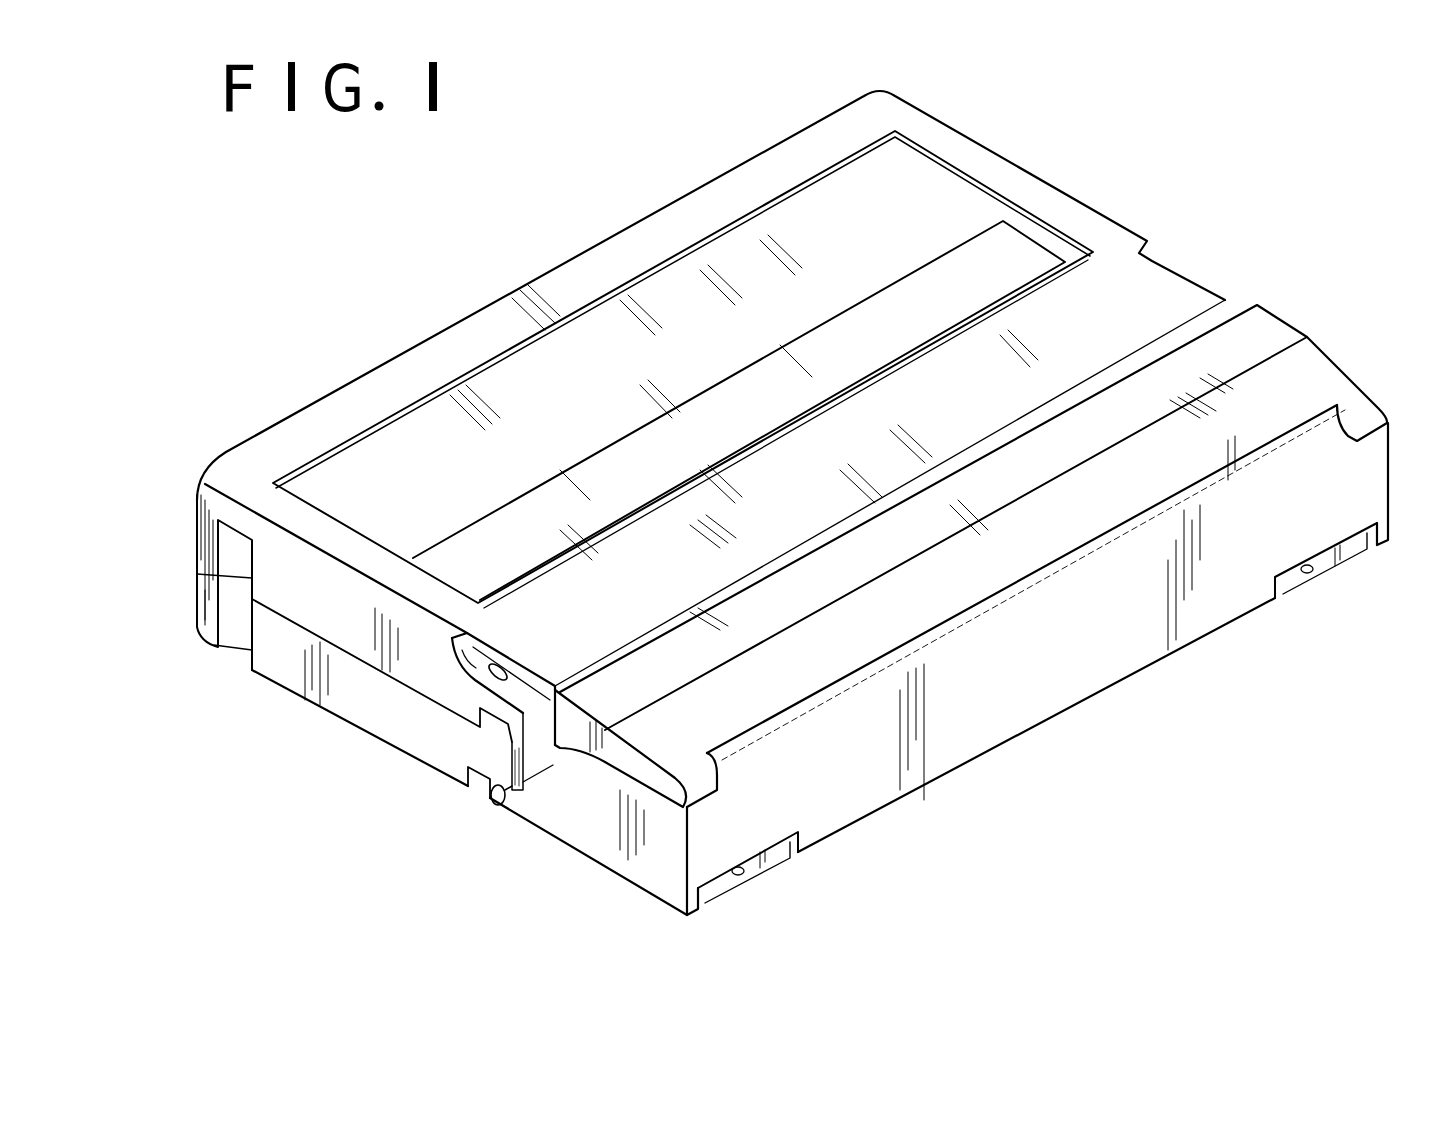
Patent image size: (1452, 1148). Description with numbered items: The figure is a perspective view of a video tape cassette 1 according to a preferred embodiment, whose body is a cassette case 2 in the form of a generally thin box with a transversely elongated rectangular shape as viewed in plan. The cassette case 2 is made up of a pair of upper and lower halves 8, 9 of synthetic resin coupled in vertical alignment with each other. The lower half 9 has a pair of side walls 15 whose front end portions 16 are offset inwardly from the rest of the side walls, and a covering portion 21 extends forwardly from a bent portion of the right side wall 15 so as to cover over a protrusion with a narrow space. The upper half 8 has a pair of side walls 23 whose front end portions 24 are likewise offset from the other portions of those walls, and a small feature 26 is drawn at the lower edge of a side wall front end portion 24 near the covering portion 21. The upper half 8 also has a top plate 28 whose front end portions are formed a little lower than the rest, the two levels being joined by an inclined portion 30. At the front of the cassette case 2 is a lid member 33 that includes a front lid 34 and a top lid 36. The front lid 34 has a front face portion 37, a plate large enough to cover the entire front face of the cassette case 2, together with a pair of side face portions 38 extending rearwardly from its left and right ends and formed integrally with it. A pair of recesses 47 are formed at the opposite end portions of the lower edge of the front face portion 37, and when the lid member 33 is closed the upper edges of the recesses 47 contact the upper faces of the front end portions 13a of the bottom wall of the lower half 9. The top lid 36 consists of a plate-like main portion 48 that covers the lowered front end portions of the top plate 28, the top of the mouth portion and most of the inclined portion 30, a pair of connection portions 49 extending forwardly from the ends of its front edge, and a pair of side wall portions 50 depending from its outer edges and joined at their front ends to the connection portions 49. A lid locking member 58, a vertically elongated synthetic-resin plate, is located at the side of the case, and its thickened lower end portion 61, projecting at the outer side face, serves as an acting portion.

The video tape cassette 1 is at (1160, 772).
The cassette case 2 is at (196, 724).
The upper half 8 is at (307, 620).
The lower half 9 is at (340, 703).
The front end portions of the bottom wall 13a is at (755, 875).
The side walls 15 is at (407, 730).
The front end portions of the side walls 16 is at (518, 800).
The covering portion 21 is at (460, 762).
The side walls 23 is at (313, 583).
The front end portions of the side walls 24 is at (535, 680).
The groove 26 is at (500, 678).
The top plate 28 is at (1120, 275).
The inclined portion 30 is at (905, 490).
The lid member 33 is at (1292, 708).
The front lid 34 is at (1118, 662).
The top lid 36 is at (1290, 330).
The front face portion 37 is at (1025, 715).
The side face portions 38 is at (648, 875).
The recesses 47 is at (740, 866).
The main portion 48 is at (1110, 403).
The connection portions 49 is at (703, 782).
The side wall portions 50 is at (632, 772).
The lid locking member 58 is at (490, 788).
The lower end portion 61 is at (500, 800).